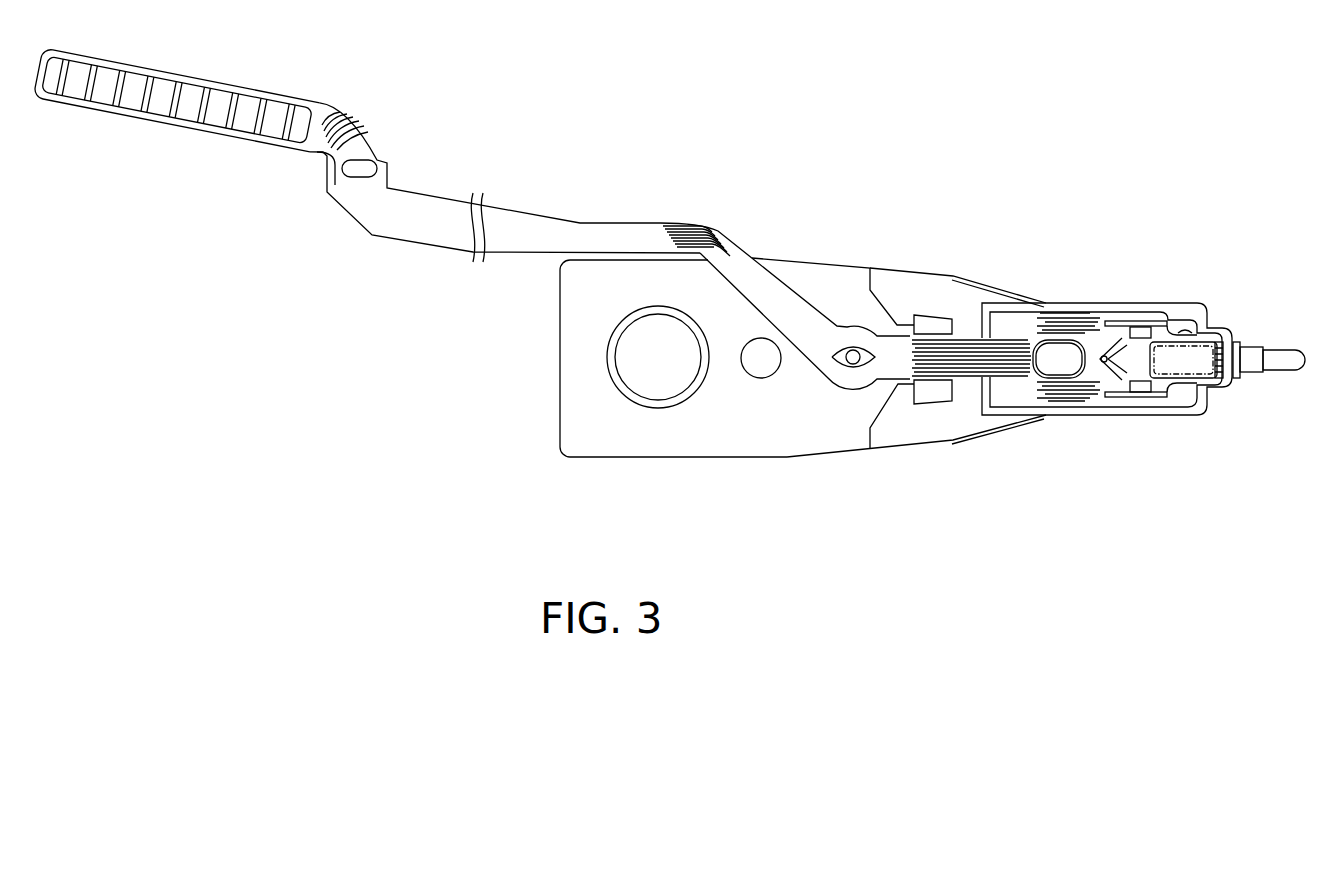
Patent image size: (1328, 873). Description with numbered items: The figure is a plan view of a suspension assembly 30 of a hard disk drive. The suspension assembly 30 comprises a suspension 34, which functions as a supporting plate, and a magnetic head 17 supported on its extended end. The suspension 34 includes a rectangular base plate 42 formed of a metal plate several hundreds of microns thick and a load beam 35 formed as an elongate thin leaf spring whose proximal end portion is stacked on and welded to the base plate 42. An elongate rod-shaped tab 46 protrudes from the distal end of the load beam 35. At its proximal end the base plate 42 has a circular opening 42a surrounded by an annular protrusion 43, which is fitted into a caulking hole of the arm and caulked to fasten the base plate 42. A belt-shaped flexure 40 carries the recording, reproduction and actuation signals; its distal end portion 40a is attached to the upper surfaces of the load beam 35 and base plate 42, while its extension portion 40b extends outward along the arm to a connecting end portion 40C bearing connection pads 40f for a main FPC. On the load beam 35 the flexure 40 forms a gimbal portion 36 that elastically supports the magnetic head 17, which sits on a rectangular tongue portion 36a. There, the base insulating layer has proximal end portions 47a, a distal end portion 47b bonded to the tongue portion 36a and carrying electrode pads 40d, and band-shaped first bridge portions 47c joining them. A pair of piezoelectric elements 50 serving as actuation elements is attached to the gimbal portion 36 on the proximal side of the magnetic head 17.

The suspension assembly 30 is at (1015, 192).
The flexure 40 is at (770, 287).
The connecting end portion 40C is at (176, 121).
The connection pads 40f is at (265, 95).
The extension portion 40b is at (532, 228).
The distal end portion 40a is at (940, 352).
The electrode pads 40d is at (1236, 366).
The suspension 34 is at (803, 404).
The base plate 42 is at (737, 385).
The circular opening 42a is at (663, 385).
The annular protrusion 43 is at (628, 392).
The load beam 35 is at (916, 390).
The gimbal portion 36 is at (1147, 381).
The tongue portion 36a is at (1189, 332).
The proximal end portions 47a is at (1074, 322).
The distal end portion 47b is at (1225, 344).
The first bridge portions 47c is at (1122, 321).
The piezoelectric elements 50 is at (1141, 327).
The magnetic head 17 is at (1190, 364).
The tab 46 is at (1276, 358).